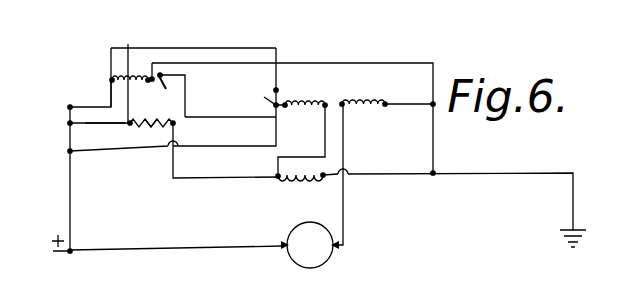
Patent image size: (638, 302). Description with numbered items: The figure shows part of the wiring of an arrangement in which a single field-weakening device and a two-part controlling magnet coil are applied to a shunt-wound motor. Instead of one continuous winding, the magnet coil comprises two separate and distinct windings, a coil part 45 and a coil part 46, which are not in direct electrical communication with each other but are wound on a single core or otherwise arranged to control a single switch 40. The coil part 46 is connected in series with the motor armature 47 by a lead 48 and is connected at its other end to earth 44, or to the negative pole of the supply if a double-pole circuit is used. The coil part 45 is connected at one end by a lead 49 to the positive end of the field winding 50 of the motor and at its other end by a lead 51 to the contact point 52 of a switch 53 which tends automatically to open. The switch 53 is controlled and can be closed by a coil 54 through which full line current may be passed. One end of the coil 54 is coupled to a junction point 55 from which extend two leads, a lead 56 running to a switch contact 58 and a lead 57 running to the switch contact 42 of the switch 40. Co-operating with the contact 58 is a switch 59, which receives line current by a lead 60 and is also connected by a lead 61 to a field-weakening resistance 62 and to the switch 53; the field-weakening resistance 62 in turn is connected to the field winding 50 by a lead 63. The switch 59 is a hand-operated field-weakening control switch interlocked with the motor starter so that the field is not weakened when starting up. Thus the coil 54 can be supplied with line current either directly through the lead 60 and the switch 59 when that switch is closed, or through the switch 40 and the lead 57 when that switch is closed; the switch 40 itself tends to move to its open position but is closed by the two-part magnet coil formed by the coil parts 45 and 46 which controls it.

The switch 40 is at (260, 104).
The switch contact 42 is at (276, 90).
The earth 44 is at (573, 222).
The coil part 45 is at (322, 100).
The coil part 46 is at (365, 96).
The motor armature 47 is at (312, 255).
The lead 48 is at (345, 143).
The lead 49 is at (325, 139).
The field winding 50 is at (424, 199).
The lead 51 is at (230, 104).
The contact point 52 is at (192, 90).
The switch 53 is at (150, 109).
The coil 54 is at (130, 71).
The junction point 55 is at (111, 79).
The lead 56 is at (111, 102).
The lead 57 is at (200, 48).
The switch contact 58 is at (70, 107).
The switch 59 is at (70, 123).
The lead 60 is at (70, 151).
The lead 61 is at (105, 123).
The field-weakening resistance 62 is at (152, 128).
The lead 63 is at (207, 178).